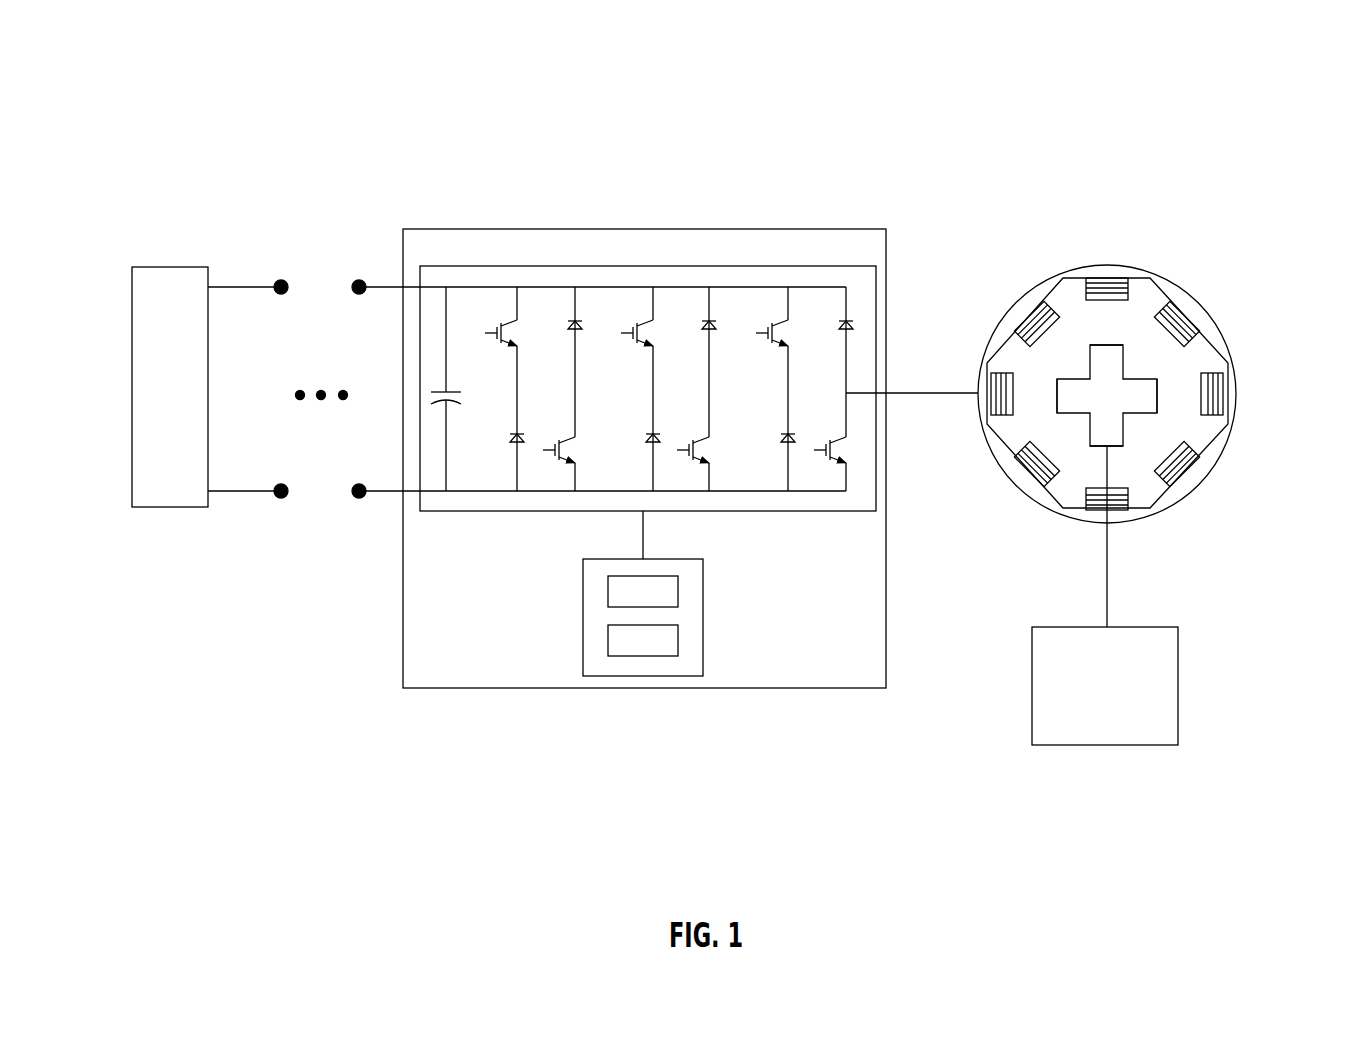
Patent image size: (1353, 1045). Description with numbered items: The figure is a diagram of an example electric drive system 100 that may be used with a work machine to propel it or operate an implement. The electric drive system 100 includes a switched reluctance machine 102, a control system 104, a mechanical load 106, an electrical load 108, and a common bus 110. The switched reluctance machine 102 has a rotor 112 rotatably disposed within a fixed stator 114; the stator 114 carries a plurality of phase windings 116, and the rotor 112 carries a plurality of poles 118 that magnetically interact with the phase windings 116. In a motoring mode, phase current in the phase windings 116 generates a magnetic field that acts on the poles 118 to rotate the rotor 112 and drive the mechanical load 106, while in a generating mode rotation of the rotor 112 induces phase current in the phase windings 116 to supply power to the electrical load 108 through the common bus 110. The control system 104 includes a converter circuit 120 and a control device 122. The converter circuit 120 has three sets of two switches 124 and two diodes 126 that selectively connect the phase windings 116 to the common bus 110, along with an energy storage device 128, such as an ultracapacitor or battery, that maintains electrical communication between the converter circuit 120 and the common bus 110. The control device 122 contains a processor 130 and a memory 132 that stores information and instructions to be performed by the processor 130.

The electric drive system 100 is at (166, 74).
The switched reluctance machine 102 is at (1246, 268).
The control system 104 is at (465, 229).
The mechanical load 106 is at (1087, 698).
The electrical load 108 is at (152, 397).
The common bus 110 is at (232, 287).
The rotor 112 is at (1089, 404).
The stator 114 is at (1233, 432).
The phase windings 116 is at (1100, 278).
The poles 118 is at (1097, 345).
The converter circuit 120 is at (673, 266).
The control device 122 is at (672, 559).
The switches 124 is at (501, 331).
The diodes 126 is at (570, 325).
The energy storage device 128 is at (450, 393).
The processor 130 is at (625, 602).
The memory 132 is at (625, 651).